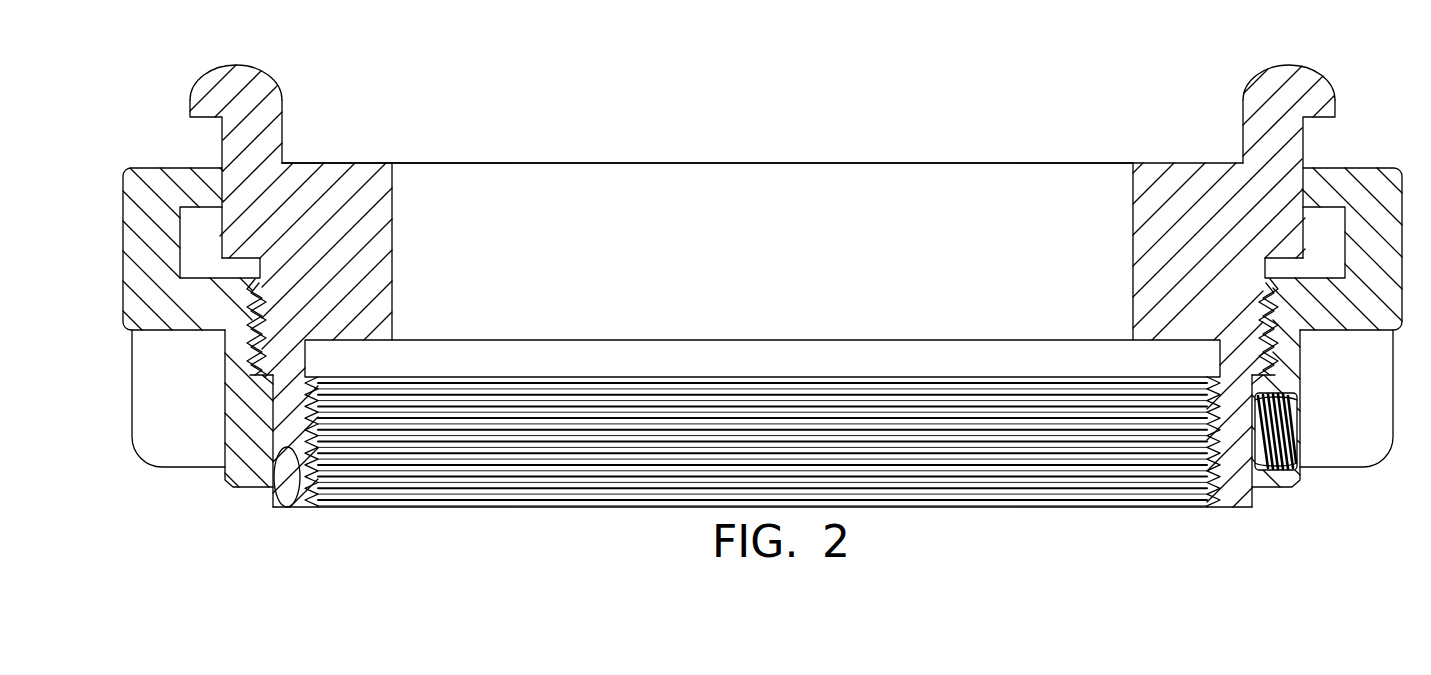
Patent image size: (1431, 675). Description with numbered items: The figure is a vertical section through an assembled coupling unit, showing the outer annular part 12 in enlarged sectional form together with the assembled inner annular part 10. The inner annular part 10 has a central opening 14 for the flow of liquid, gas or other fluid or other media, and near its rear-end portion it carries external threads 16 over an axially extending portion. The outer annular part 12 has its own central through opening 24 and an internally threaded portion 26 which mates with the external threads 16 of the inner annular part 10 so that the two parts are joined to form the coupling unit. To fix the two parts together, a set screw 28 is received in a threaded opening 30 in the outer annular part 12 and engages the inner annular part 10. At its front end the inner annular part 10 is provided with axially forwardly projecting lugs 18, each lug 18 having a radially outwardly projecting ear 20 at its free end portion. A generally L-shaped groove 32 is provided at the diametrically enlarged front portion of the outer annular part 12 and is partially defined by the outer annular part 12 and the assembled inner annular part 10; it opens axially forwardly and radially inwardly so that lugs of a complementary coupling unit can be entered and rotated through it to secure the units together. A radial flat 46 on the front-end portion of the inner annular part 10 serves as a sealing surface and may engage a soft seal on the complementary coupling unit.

The inner annular part 10 is at (415, 180).
The outer annular part 12 is at (212, 490).
The central opening 14 is at (392, 253).
The external threads 16 is at (248, 332).
The lug 18 is at (283, 112).
The ear 20 is at (190, 103).
The central through opening 24 is at (298, 505).
The internally threaded portion 26 is at (250, 363).
The set screw 28 is at (1281, 470).
The threaded opening 30 is at (1296, 425).
The L-shaped groove 32 is at (200, 227).
The radial flat 46 is at (317, 163).